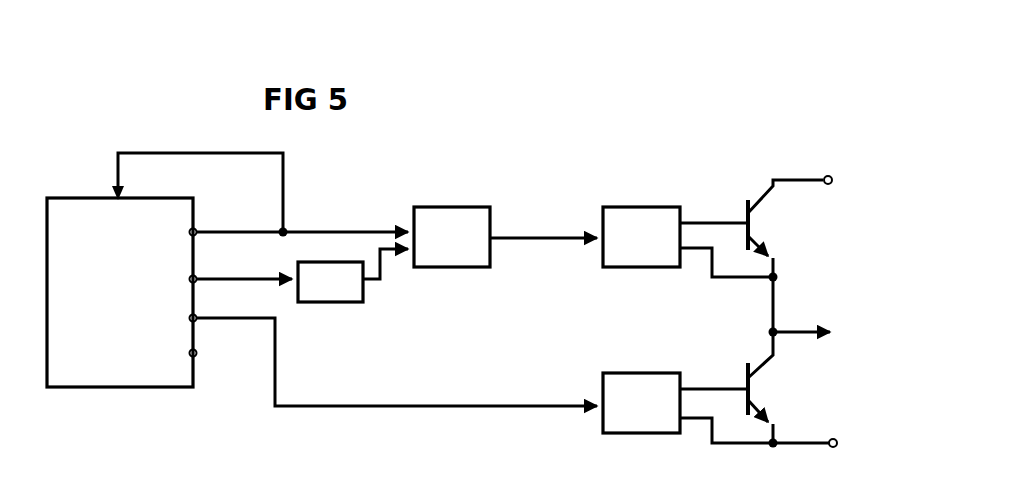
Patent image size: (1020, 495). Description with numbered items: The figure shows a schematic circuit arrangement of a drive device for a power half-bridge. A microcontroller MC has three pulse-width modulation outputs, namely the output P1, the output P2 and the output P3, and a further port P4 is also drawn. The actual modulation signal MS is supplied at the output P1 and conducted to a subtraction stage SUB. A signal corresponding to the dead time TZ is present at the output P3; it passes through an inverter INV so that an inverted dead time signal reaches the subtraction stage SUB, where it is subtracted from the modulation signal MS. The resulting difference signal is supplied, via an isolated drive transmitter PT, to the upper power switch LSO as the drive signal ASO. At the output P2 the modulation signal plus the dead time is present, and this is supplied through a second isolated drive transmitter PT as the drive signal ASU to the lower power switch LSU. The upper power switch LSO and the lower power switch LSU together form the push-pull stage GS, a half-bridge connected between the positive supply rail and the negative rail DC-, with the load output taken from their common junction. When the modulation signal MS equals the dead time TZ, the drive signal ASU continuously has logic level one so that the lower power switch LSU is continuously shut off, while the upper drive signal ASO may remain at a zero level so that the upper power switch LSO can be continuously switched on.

The microcontroller MC is at (180, 425).
The output P1 is at (176, 227).
The output P2 is at (176, 317).
The output P3 is at (176, 277).
The microcontroller port P4 is at (176, 356).
The modulation signal MS is at (302, 213).
The dead time TZ is at (244, 262).
The inverter INV is at (414, 275).
The subtraction stage SUB is at (457, 182).
The drive signal ASO is at (543, 219).
The drive signal ASU is at (443, 384).
The isolated drive transmitter PT is at (672, 98).
The push-pull stage GS is at (740, 204).
The upper power switch LSO is at (788, 256).
The lower power switch LSU is at (788, 390).
The negative DC rail DC- is at (829, 444).